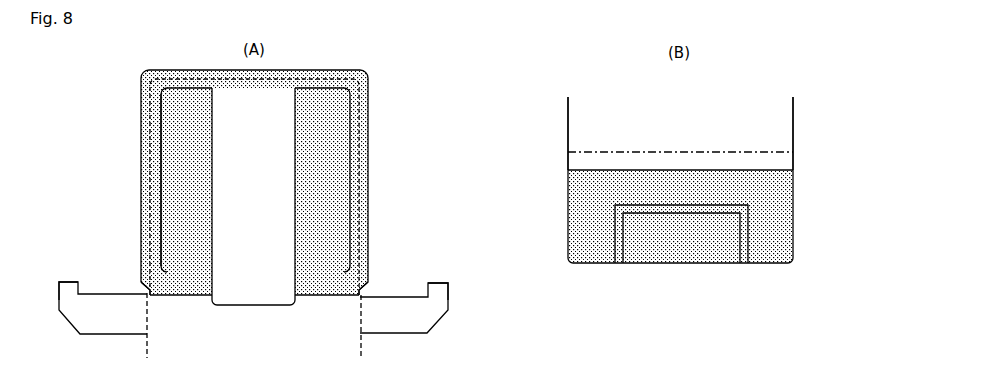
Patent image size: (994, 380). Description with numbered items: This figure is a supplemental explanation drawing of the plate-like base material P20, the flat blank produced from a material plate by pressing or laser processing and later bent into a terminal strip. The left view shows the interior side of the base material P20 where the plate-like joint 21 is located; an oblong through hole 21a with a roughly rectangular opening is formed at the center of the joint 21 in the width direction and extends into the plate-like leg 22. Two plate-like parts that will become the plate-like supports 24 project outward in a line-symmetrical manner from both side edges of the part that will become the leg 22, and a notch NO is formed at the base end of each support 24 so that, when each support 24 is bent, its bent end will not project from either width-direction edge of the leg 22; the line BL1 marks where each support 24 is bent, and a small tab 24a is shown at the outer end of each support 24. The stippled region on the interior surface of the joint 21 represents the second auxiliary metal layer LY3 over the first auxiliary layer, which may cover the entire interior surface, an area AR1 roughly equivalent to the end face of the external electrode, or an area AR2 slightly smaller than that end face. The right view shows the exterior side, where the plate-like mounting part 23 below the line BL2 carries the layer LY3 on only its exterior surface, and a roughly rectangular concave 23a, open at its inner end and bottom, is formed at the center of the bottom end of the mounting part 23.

The plate-like base material P20 is at (138, 117).
The plate-like joint 21 is at (157, 172).
The oblong through hole 21a is at (292, 203).
The plate-like leg 22 is at (588, 122).
The plate-like mounting part 23 is at (587, 227).
The concave 23a is at (680, 247).
The plate-like support 24 is at (108, 305).
The bracket tab 24a is at (67, 280).
The area AR1 is at (370, 73).
The area AR2 is at (361, 110).
The second auxiliary metal layer LY3 is at (327, 142).
The boundary line 1 BL1 is at (146, 317).
The boundary line 2 BL2 is at (617, 155).
The notch NO is at (150, 297).